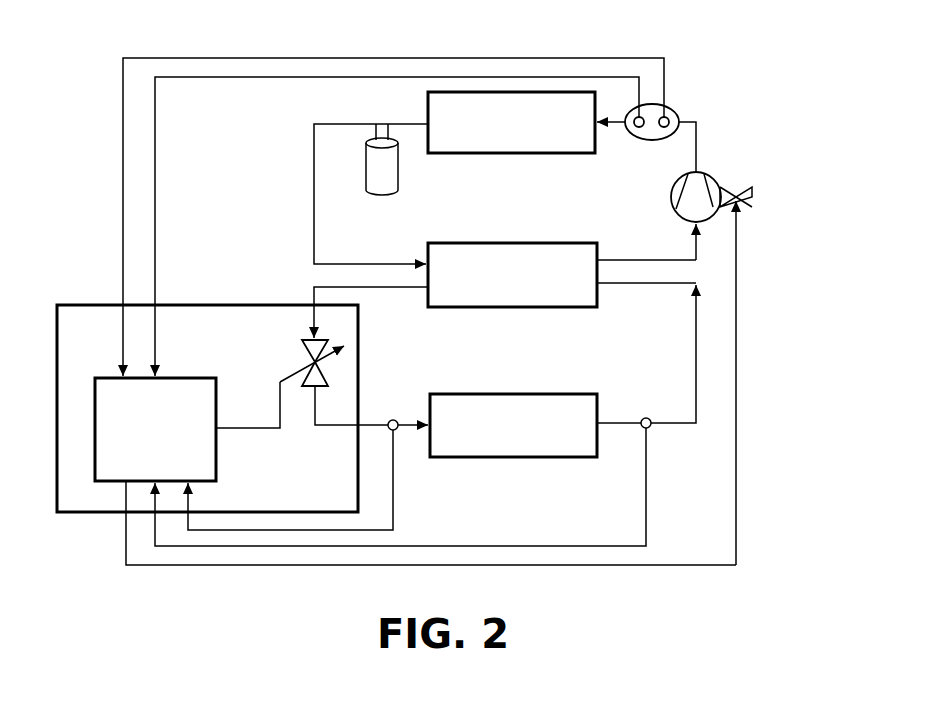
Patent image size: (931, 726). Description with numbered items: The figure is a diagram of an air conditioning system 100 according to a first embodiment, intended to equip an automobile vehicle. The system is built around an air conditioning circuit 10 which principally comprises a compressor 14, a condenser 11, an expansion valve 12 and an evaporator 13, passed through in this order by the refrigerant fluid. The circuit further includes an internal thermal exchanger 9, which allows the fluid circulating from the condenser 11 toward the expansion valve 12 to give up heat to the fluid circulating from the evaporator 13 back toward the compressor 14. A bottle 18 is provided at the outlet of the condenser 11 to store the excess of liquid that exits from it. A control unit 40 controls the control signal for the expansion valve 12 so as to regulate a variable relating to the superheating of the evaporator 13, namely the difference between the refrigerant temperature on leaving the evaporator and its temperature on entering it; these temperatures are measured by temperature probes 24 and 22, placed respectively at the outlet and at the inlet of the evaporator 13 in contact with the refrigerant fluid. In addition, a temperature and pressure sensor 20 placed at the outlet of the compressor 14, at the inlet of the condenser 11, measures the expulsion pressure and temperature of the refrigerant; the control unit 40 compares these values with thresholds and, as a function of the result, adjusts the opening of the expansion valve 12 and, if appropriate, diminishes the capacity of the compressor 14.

The air conditioning system 100 is at (106, 181).
The control unit 40 is at (216, 455).
The temperature and pressure sensor 20 is at (673, 106).
The condenser 11 is at (537, 128).
The bottle 18 is at (390, 178).
The compressor 14 is at (709, 173).
The internal thermal exchanger 9 is at (545, 260).
The expansion valve 12 is at (302, 352).
The temperature probe 22 is at (393, 419).
The evaporator 13 is at (528, 405).
The temperature probe 24 is at (646, 417).
The air conditioning circuit 10 is at (670, 363).